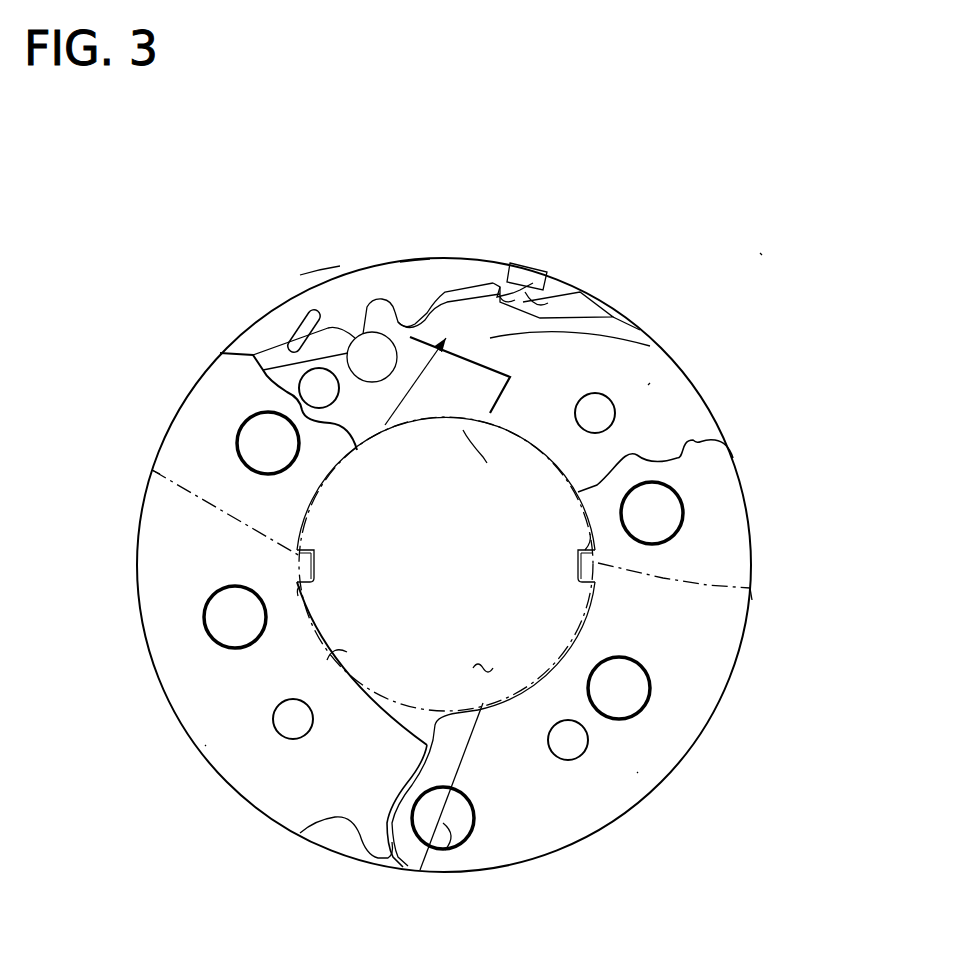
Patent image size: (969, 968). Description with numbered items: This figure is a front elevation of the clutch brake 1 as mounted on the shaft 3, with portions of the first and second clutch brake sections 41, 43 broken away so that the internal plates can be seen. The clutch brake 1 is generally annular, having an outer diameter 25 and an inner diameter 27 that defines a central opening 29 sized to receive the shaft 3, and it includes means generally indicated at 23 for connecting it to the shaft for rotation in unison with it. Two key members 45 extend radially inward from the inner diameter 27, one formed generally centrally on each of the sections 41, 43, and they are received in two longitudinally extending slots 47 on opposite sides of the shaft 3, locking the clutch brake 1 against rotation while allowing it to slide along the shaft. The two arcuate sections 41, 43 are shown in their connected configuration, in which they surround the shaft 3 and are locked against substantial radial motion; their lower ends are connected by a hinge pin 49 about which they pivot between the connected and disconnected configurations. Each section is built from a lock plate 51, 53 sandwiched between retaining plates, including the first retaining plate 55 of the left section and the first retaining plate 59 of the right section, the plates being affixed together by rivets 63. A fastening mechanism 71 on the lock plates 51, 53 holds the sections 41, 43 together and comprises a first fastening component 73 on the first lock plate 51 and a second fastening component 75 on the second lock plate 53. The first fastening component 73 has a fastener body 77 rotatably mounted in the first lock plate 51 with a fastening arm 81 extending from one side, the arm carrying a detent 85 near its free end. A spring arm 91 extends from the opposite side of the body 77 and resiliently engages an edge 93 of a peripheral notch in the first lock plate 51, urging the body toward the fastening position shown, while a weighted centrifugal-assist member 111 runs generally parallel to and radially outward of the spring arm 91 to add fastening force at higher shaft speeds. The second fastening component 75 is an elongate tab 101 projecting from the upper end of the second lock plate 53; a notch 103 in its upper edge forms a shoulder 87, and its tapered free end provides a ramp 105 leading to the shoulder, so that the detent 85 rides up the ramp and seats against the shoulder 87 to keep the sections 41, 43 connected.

The clutch brake 1 is at (762, 251).
The shaft 3 is at (487, 463).
The means for connecting the clutch brake to the shaft 23 is at (322, 564).
The outer diameter 25 is at (730, 460).
The inner diameter 27 is at (347, 652).
The central opening 29 is at (473, 672).
The first arcuate section 41 is at (132, 556).
The second arcuate section 43 is at (746, 642).
The key member 45 is at (585, 550).
The slot 47 is at (152, 467).
The hinge pin 49 is at (420, 870).
The lock plate 51 is at (220, 353).
The lock plate 53 is at (650, 383).
The first retaining plate 55 is at (228, 738).
The first retaining plate 59 is at (637, 772).
The rivet 63 is at (262, 440).
The fastening mechanism 71 is at (522, 262).
The first fastening component 73 is at (313, 285).
The second fastening component 75 is at (385, 425).
The fastener body 77 is at (338, 290).
The fastening arm 81 is at (414, 272).
The detent 85 is at (543, 268).
The shoulder 87 is at (510, 288).
The spring arm 91 is at (288, 312).
The edge 93 is at (280, 345).
The elongate tab 101 is at (650, 346).
The notch 103 is at (618, 318).
The ramp 105 is at (458, 288).
The centrifugal-assist member 111 is at (306, 314).